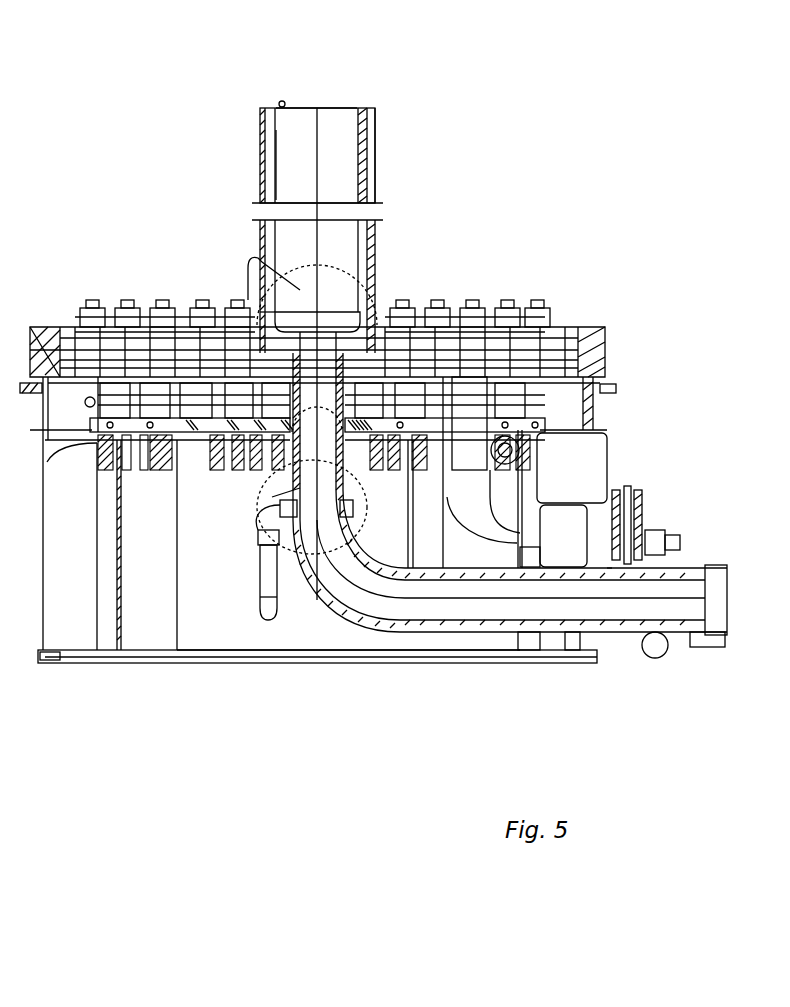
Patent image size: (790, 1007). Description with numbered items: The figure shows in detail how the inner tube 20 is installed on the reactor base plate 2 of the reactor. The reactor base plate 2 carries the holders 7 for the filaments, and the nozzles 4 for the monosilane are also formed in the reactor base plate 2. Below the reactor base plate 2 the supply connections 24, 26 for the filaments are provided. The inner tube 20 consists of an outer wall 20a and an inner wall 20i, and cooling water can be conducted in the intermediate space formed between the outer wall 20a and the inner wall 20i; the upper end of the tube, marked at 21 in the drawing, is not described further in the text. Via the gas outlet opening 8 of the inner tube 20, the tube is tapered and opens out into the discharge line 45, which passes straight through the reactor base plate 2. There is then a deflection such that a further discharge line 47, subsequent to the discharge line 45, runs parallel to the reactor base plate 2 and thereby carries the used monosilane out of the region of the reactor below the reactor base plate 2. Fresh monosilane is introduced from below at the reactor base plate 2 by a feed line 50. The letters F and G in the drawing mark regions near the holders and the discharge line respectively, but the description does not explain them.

The reactor base plate 2 is at (607, 340).
The nozzles 4 is at (85, 343).
The holders 7 is at (194, 306).
The gas outlet opening 8 is at (312, 106).
The inner tube 20 is at (380, 246).
The outer wall 20a is at (375, 175).
The inner wall 20i is at (300, 140).
The pipe inlet 21 is at (345, 106).
The supply connection 24 is at (36, 452).
The supply connection 26 is at (119, 448).
The discharge line 45 is at (303, 486).
The further discharge line 47 is at (517, 600).
The feed line 50 is at (577, 500).
The flow direction F is at (271, 281).
The gas region G is at (311, 480).